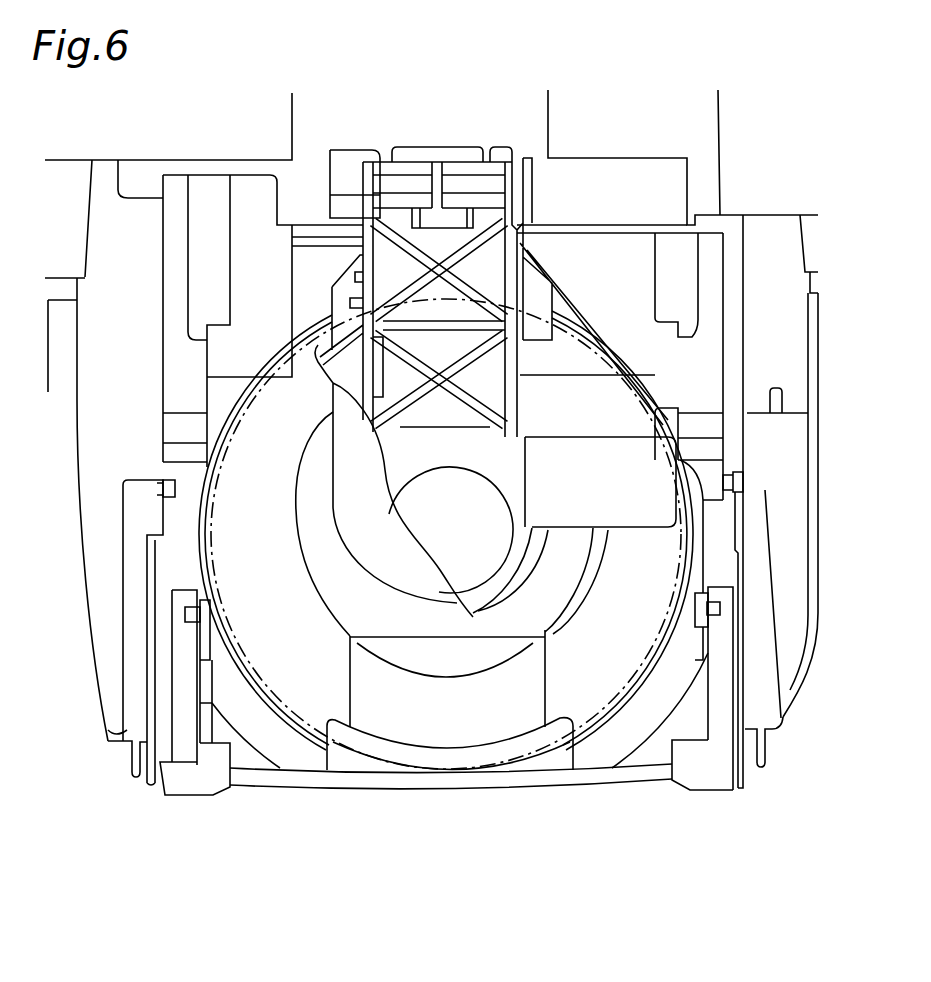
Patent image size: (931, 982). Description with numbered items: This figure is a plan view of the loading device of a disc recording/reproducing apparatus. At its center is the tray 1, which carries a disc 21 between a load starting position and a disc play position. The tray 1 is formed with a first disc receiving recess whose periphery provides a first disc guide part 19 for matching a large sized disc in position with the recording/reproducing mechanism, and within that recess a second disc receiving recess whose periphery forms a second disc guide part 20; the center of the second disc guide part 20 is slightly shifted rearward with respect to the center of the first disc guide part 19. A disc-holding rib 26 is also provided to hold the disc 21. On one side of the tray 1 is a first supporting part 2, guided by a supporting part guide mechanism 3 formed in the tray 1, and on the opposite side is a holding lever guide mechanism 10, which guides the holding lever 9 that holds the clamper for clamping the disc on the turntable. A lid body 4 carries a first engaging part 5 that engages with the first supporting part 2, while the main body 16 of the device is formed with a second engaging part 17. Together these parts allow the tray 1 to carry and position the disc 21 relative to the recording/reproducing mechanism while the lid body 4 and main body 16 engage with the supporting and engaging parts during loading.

The tray 1 is at (293, 748).
The first supporting part 2 is at (720, 607).
The supporting part guide mechanism 3 is at (717, 467).
The lid body 4 is at (200, 775).
The first engaging part 5 is at (722, 613).
The holding lever 9 is at (508, 470).
The holding lever guide mechanism 10 is at (723, 390).
The main body 16 is at (767, 713).
The second engaging part 17 is at (747, 483).
The first disc guide part 19 is at (610, 720).
The second disc guide part 20 is at (307, 598).
The disc 21 is at (383, 767).
The disc-holding rib 26 is at (307, 443).